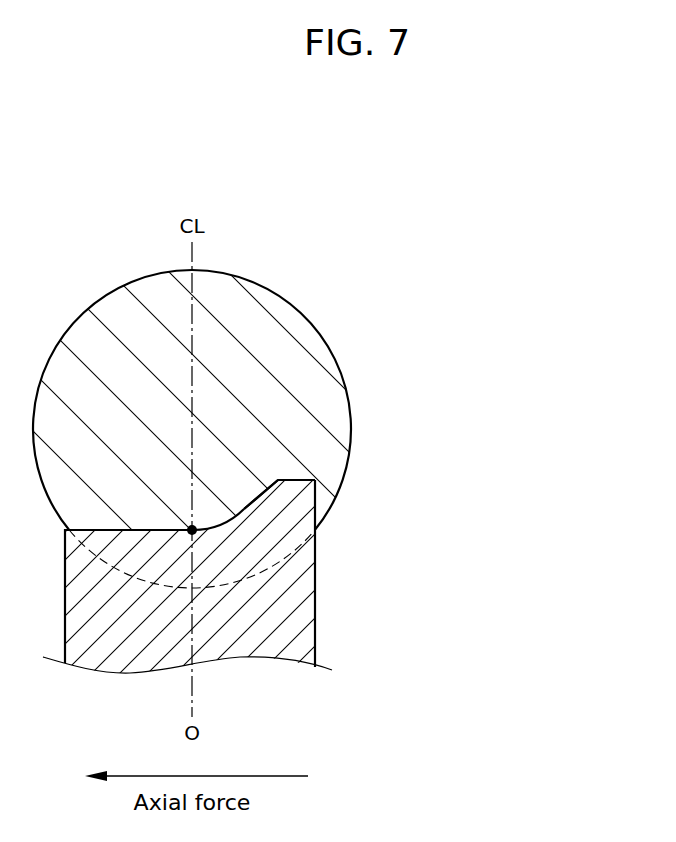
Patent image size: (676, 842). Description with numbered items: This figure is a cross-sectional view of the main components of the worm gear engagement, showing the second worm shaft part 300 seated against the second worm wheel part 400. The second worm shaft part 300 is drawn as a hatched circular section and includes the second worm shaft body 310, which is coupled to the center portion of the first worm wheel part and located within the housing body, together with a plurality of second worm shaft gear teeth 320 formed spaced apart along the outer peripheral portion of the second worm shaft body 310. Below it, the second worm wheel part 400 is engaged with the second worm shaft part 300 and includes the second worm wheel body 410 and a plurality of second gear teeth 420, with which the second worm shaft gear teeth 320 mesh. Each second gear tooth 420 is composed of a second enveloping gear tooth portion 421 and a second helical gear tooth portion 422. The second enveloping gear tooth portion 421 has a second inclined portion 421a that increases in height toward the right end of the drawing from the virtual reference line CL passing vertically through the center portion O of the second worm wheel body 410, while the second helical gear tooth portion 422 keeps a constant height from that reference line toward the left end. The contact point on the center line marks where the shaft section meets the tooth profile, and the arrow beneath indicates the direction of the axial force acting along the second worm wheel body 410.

The second worm shaft part 300 is at (226, 371).
The second worm shaft body 310 is at (220, 402).
The second worm shaft gear teeth 320 is at (330, 400).
The second worm wheel part 400 is at (338, 410).
The second worm wheel body 410 is at (287, 618).
The second gear teeth 420 is at (339, 501).
The second enveloping gear tooth portion 421 is at (292, 498).
The second inclined portion 421a is at (255, 503).
The second helical gear tooth portion 422 is at (193, 532).